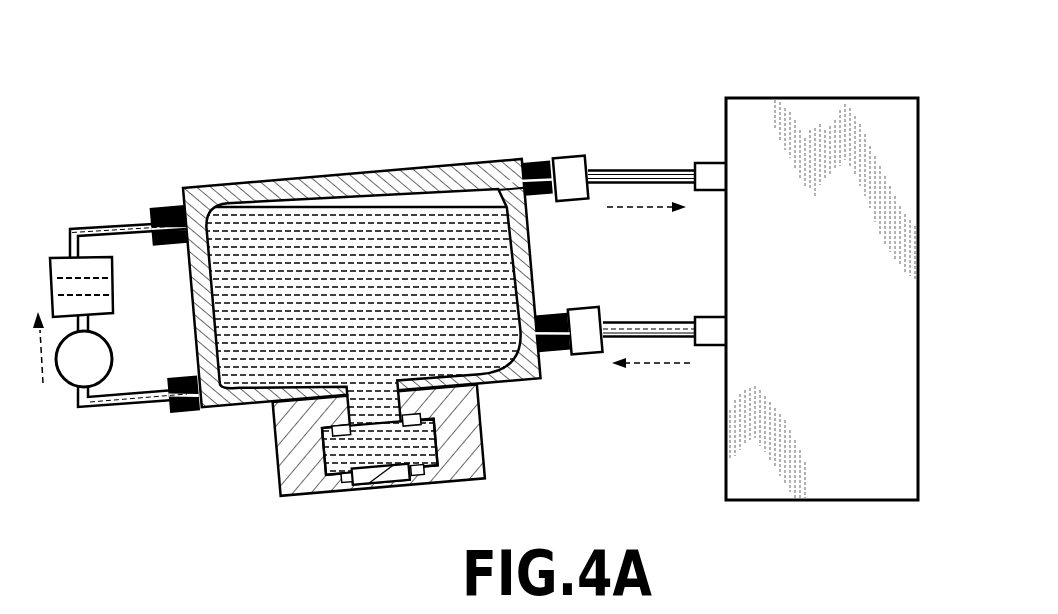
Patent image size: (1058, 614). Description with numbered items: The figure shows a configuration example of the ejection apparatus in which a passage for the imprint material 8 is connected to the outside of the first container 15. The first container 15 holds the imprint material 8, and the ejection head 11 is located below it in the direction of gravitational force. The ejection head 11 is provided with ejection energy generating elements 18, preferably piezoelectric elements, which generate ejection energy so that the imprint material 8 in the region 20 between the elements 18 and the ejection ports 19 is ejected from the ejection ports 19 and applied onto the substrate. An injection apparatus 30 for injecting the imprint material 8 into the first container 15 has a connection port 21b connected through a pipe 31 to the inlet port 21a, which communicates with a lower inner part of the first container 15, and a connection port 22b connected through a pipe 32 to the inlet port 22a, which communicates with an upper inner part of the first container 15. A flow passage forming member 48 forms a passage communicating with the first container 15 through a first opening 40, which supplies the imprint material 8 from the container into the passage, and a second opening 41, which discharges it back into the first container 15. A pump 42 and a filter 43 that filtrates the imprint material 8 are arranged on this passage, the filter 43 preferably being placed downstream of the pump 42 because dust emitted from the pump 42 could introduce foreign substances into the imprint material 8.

The imprint material 8 is at (240, 228).
The ejection head 11 is at (285, 452).
The first container 15 is at (349, 170).
The ejection energy generating element 18 is at (353, 406).
The ejection port 19 is at (413, 481).
The region 20 is at (433, 463).
The inlet port 21a is at (581, 310).
The connection port 21b is at (701, 317).
The inlet port 22a is at (567, 158).
The connection port 22b is at (701, 163).
The injection apparatus 30 is at (776, 68).
The pipe 31 is at (645, 322).
The pipe 32 is at (644, 170).
The first opening 40 is at (177, 412).
The second opening 41 is at (163, 207).
The pump 42 is at (67, 387).
The filter 43 is at (53, 259).
The flow passage forming member 48 is at (95, 228).